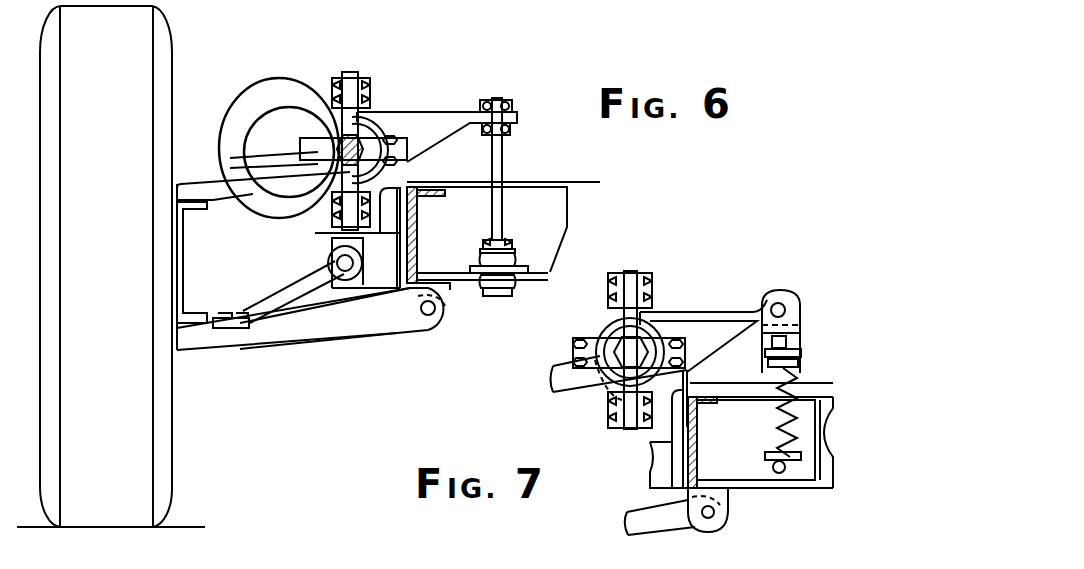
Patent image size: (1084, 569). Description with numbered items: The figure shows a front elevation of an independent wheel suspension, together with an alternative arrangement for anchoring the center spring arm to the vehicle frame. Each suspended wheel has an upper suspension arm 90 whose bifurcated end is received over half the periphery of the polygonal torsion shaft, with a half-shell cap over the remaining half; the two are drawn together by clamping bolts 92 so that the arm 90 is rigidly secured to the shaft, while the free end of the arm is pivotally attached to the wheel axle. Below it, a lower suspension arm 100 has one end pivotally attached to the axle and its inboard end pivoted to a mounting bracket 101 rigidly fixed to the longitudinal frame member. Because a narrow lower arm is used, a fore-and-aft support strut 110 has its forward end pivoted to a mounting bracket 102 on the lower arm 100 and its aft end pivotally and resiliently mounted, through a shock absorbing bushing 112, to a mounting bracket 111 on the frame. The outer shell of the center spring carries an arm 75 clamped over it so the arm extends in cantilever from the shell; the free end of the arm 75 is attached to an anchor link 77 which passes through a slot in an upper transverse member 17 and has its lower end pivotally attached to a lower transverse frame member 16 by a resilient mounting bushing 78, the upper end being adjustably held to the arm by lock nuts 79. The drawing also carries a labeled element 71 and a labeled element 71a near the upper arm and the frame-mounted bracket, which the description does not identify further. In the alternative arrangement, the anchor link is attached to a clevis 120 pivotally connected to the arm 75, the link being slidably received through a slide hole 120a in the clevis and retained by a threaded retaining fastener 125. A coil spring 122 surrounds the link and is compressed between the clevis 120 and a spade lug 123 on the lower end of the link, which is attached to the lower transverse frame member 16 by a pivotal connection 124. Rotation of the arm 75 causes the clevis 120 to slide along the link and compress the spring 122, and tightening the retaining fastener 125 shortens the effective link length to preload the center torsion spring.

In FIG. 6, the lower transverse frame member 16 is at (543, 277).
In FIG. 6, the upper transverse member 17 is at (580, 182).
In FIG. 6, the spindle 71 is at (276, 141).
In FIG. 6, the spindle arm 71a is at (380, 236).
In FIG. 6, the arm 75 is at (467, 117).
In FIG. 7, the arm 75 is at (718, 325).
In FIG. 6, the anchor link 77 is at (502, 158).
In FIG. 6, the resilient mounting bushing 78 is at (527, 257).
In FIG. 6, the lock nuts 79 is at (512, 120).
In FIG. 6, the upper suspension arm 90 is at (250, 220).
In FIG. 6, the clamping bolts 92 is at (258, 122).
In FIG. 6, the lower suspension arm 100 is at (332, 324).
In FIG. 6, the mounting bracket 101 is at (448, 306).
In FIG. 6, the mounting bracket 102 is at (245, 330).
In FIG. 6, the fore-and-aft support strut 110 is at (273, 303).
In FIG. 6, the mounting bracket 111 is at (383, 293).
In FIG. 6, the shock absorbing bushing 112 is at (363, 290).
In FIG. 7, the clevis 120 is at (790, 305).
In FIG. 7, the slide hole 120a is at (796, 372).
In FIG. 7, the coil spring 122 is at (767, 411).
In FIG. 7, the clevis or spade lug 123 is at (767, 452).
In FIG. 7, the pivotal connection 124 is at (783, 472).
In FIG. 7, the retaining fastener 125 is at (795, 342).